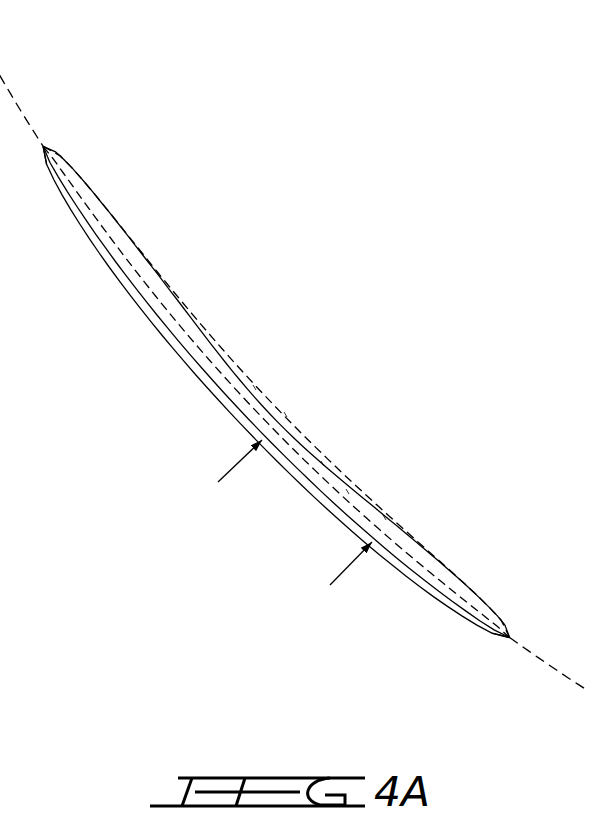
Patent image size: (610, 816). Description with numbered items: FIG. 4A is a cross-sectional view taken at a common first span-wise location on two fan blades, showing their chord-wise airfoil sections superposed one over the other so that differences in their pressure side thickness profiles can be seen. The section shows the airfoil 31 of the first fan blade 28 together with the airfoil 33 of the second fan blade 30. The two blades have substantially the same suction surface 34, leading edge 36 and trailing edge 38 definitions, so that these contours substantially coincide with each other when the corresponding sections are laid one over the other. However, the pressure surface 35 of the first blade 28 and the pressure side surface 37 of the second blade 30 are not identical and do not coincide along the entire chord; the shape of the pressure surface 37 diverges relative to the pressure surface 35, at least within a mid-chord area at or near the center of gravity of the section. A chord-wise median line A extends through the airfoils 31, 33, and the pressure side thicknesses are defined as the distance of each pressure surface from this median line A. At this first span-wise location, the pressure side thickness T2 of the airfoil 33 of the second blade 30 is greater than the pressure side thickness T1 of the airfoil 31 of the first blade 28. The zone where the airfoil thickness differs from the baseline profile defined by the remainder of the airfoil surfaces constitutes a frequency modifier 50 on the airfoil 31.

The first fan blade 28 is at (172, 341).
The second fan blade 30 is at (263, 386).
The airfoil 31 is at (323, 465).
The airfoil 33 is at (348, 492).
The suction surface 34 is at (285, 478).
The pressure surface 35 is at (229, 373).
The leading edge 36 is at (43, 147).
The pressure side surface 37 is at (304, 456).
The trailing edge 38 is at (510, 637).
The frequency modifier 50 is at (255, 389).
The pressure side thickness T1 is at (286, 415).
The pressure side thickness T2 is at (385, 518).
The chord-wise median line A is at (567, 678).